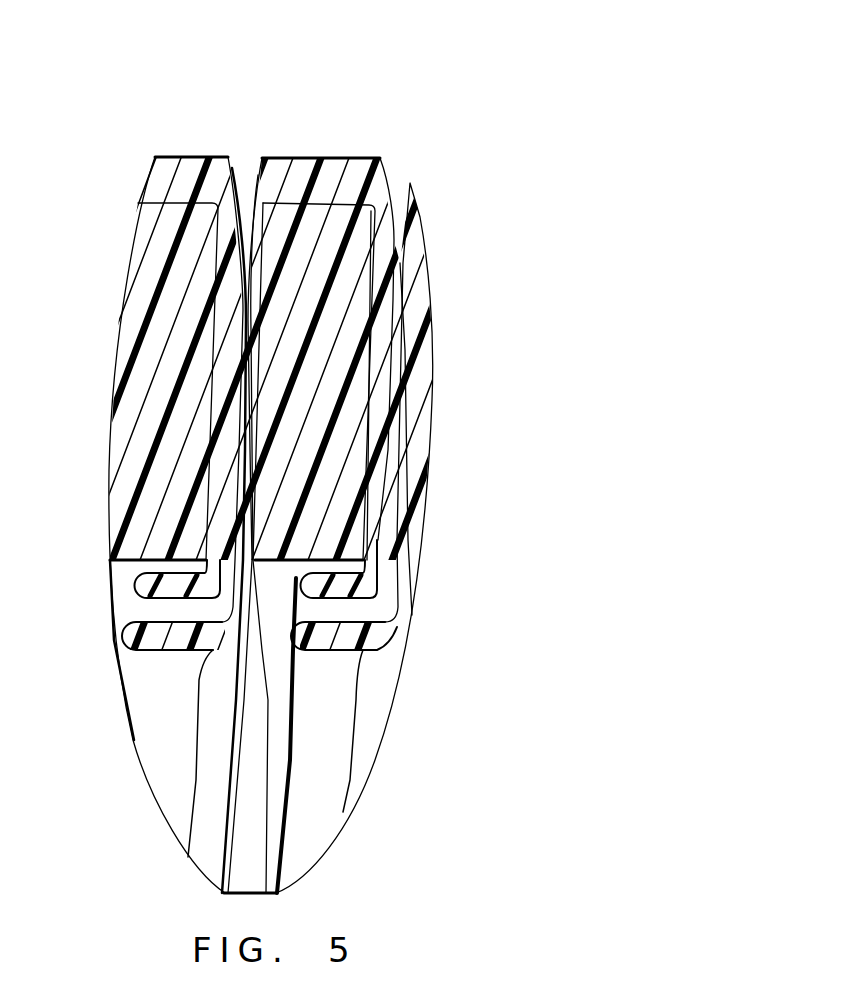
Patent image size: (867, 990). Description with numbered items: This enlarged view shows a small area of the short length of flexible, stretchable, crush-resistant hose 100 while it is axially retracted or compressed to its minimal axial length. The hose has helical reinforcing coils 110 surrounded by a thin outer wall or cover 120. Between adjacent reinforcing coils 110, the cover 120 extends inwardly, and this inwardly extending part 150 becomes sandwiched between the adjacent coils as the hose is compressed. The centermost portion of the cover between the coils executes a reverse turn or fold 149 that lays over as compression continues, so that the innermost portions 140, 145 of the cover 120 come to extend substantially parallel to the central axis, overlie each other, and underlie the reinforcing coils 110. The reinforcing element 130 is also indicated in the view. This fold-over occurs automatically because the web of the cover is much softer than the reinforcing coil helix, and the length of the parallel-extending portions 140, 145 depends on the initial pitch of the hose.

The hose 100 is at (389, 97).
The reinforcing coils 110 is at (338, 244).
The outer wall or cover 120 is at (170, 174).
The conductor 130 is at (183, 300).
The innermost portion 140 is at (186, 562).
The innermost portion 145 is at (178, 660).
The fold 149 is at (148, 574).
The part of central portion extending between coils 150 is at (254, 304).